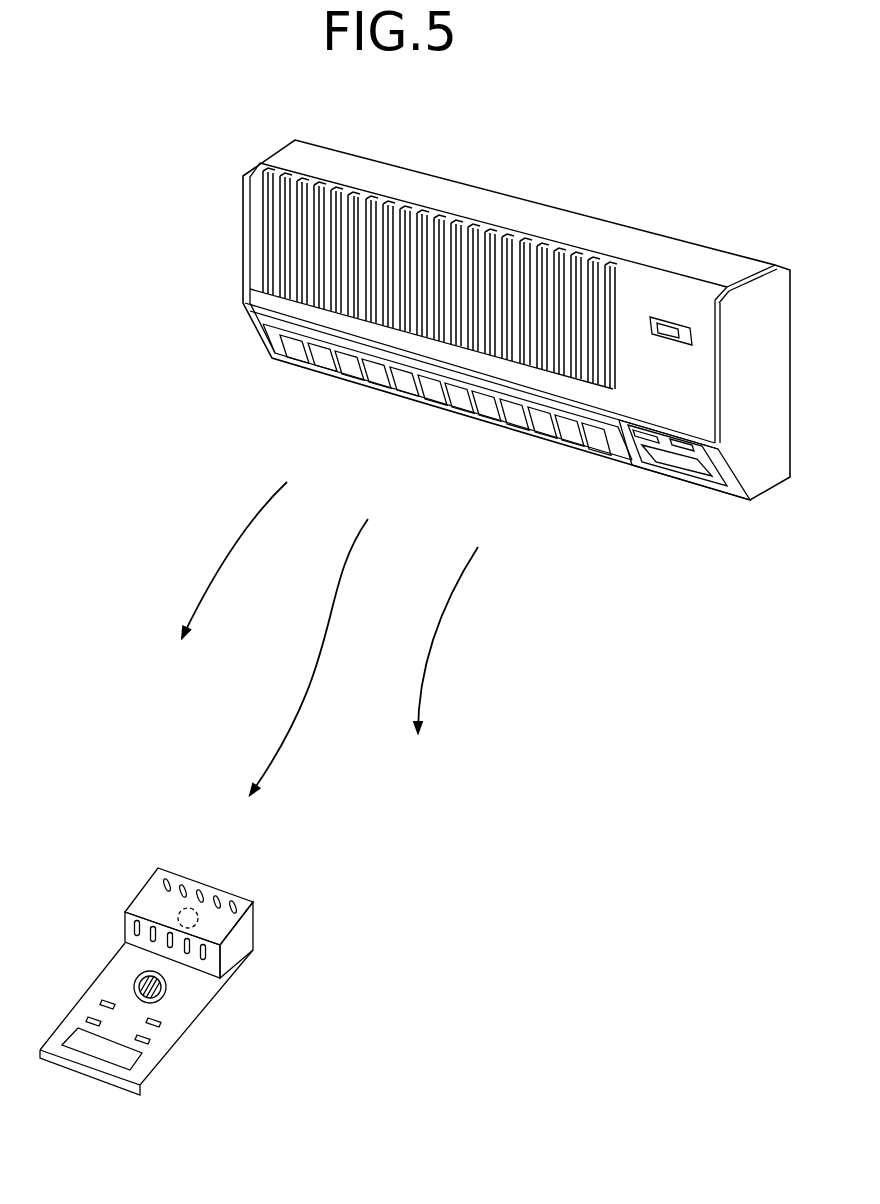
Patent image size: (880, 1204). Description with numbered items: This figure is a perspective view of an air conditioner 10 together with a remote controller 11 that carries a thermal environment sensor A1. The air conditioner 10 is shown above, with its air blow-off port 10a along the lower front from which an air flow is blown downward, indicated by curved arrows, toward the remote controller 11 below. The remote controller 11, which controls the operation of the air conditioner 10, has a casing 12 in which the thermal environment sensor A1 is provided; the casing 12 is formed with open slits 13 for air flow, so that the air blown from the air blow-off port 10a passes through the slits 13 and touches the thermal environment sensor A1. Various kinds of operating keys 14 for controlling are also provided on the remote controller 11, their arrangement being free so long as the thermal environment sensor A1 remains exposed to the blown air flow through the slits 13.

The air conditioner 10 is at (475, 295).
The air blow-off port 10a is at (322, 363).
The remote controller 11 is at (193, 983).
The casing 12 is at (257, 920).
The open slits 13 is at (237, 898).
The operating keys 14 is at (147, 1038).
The thermal environment sensor A1 is at (173, 912).